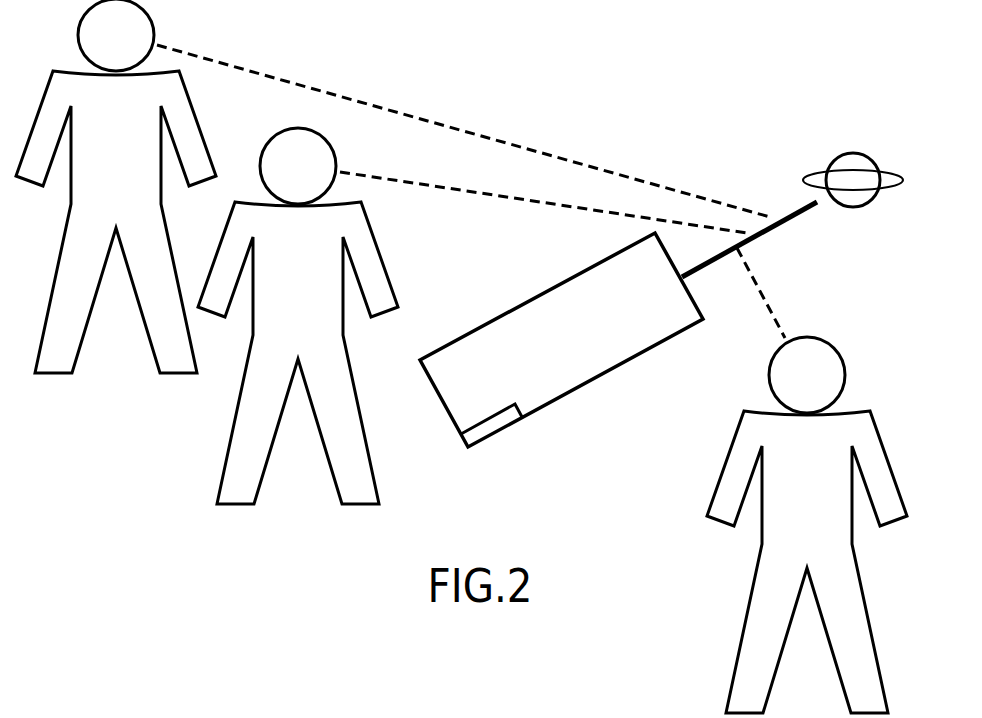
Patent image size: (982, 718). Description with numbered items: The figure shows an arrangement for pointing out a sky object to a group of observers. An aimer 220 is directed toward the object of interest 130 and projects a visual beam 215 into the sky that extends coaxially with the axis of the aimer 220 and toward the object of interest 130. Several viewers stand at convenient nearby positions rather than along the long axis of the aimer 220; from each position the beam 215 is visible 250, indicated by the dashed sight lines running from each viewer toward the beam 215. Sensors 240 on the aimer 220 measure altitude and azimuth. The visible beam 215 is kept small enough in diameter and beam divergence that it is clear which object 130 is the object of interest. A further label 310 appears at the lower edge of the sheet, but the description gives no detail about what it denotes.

The object of interest 130 is at (853, 153).
The visual beam 215 is at (800, 215).
The aimer 220 is at (540, 296).
The sensors 240 is at (507, 428).
The visible 250 is at (478, 135).
The floor / ground 310 is at (305, 708).